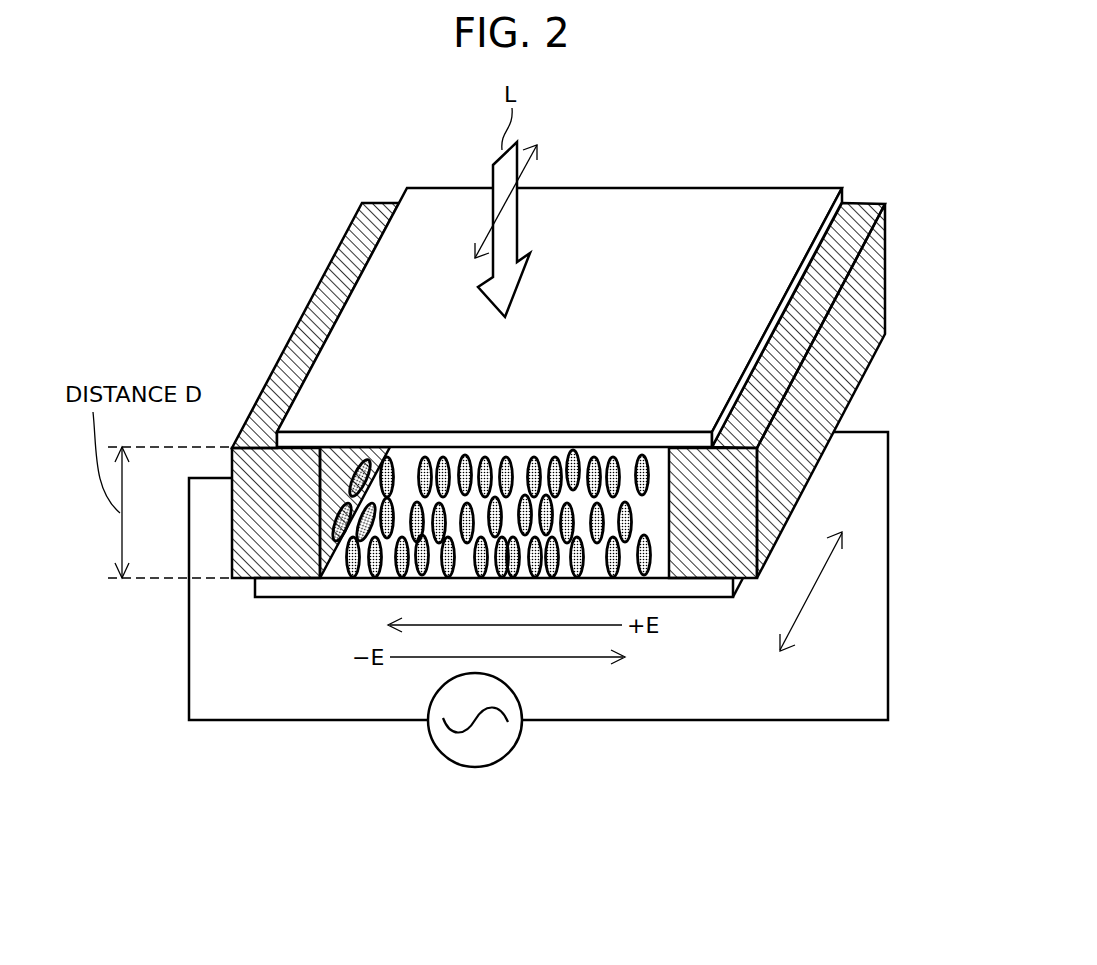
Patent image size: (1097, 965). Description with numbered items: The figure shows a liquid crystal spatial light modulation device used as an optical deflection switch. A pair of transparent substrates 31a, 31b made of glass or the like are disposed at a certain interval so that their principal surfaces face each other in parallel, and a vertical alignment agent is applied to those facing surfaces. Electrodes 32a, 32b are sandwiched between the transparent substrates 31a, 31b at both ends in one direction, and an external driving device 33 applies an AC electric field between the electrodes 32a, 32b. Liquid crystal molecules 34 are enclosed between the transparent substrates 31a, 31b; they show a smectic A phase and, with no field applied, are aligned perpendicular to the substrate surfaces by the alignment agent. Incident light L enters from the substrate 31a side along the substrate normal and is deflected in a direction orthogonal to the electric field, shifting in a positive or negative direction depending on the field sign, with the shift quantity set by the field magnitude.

The transparent substrate 31a is at (678, 202).
The transparent substrate 31b is at (713, 587).
The electrode 32a is at (740, 582).
The electrode 32b is at (265, 562).
The external driving device 33 is at (475, 768).
The liquid crystal molecules 34 is at (648, 462).